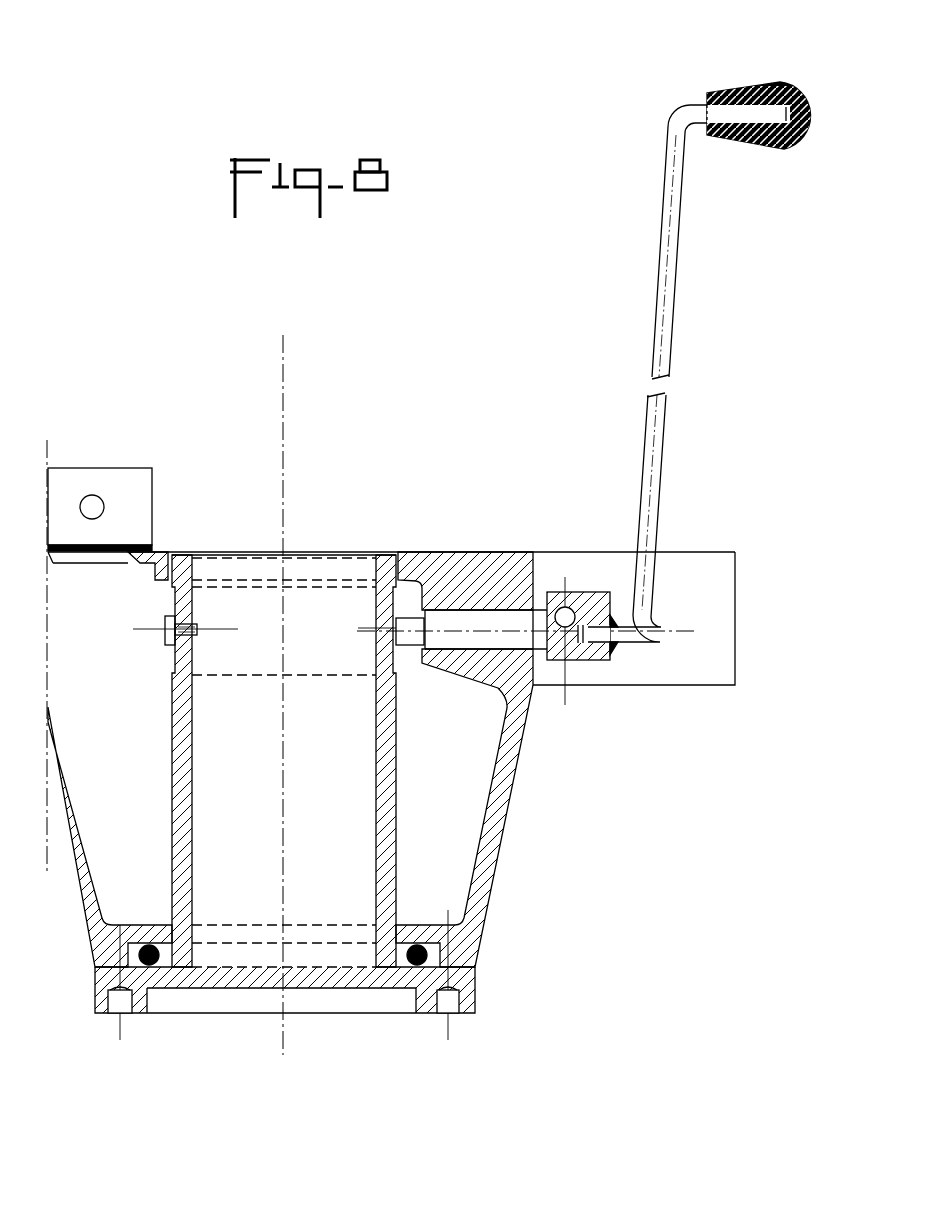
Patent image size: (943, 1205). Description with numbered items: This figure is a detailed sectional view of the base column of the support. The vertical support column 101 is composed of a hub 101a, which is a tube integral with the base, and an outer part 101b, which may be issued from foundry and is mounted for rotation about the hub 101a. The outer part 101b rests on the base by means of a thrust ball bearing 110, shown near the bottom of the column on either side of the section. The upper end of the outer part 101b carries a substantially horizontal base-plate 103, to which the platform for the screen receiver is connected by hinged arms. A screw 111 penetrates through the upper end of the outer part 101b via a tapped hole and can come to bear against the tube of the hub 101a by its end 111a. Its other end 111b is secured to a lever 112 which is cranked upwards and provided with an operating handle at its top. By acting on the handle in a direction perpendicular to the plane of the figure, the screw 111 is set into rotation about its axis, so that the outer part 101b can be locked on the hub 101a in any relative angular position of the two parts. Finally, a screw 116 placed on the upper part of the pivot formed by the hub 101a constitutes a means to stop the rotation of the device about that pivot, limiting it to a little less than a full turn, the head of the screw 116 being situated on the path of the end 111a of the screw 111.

The vertical support column 101 is at (331, 782).
The hub 101a is at (388, 813).
The outer part 101b is at (490, 832).
The base-plate 103 is at (130, 483).
The thrust ball bearing 110 is at (153, 943).
The screw 111 is at (460, 625).
The end of the screw 111a is at (398, 638).
The other end of the screw 111b is at (577, 640).
The lever 112 is at (655, 495).
The screw 116 is at (168, 637).